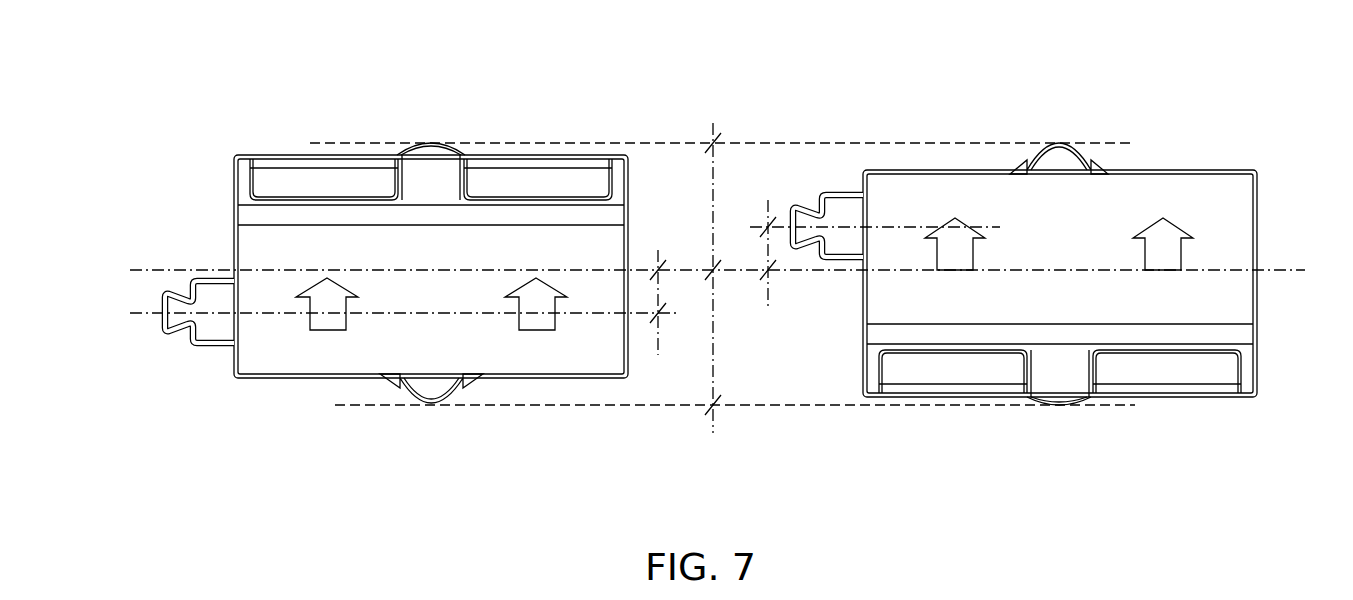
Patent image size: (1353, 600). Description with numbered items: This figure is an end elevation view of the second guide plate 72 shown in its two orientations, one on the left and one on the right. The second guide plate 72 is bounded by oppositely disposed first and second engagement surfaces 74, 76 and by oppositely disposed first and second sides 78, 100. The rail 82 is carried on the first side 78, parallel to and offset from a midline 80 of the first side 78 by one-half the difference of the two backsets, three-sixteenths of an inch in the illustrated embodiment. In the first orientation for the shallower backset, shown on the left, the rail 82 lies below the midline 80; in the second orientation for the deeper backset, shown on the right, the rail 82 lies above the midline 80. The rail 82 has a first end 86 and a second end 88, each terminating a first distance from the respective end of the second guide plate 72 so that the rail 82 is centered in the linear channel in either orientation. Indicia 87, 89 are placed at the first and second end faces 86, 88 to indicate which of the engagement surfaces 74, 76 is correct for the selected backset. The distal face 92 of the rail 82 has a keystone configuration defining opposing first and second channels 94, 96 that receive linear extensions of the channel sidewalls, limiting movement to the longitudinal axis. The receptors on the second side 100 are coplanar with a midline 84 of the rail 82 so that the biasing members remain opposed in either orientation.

The second guide plate 72 is at (395, 90).
The first engagement surface 74 is at (432, 143).
The second engagement surface 76 is at (432, 405).
The first side 78 is at (233, 190).
The midline 80 is at (745, 278).
The rail 82 is at (476, 248).
The midline of the rail 84 is at (273, 314).
The first end 86 is at (218, 324).
The indicia 87 is at (328, 332).
The second end 88 is at (848, 208).
The indicia 89 is at (1165, 237).
The distal face 92 is at (160, 320).
The first channel 94 is at (180, 335).
The second channel 96 is at (190, 295).
The second side 100 is at (628, 188).